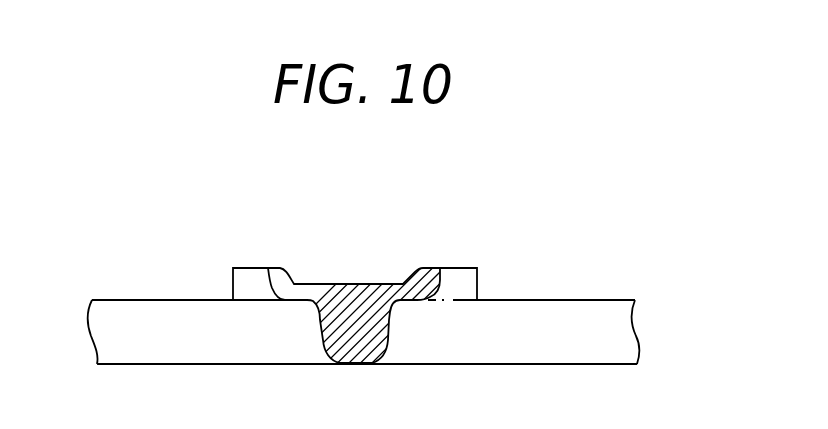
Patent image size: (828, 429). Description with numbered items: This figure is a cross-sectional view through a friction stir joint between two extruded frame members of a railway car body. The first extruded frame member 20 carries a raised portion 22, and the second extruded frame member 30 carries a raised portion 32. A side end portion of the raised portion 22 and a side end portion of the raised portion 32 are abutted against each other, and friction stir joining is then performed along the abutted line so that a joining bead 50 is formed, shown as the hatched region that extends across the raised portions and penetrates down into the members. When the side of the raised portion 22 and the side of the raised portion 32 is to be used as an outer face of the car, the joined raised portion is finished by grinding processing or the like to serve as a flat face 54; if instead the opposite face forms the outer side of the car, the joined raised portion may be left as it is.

The first extruded frame member 20 is at (152, 318).
The raised portion 22 is at (253, 282).
The second extruded frame member 30 is at (547, 320).
The raised portion 32 is at (455, 283).
The joining bead 50 is at (325, 280).
The flat face 54 is at (362, 280).